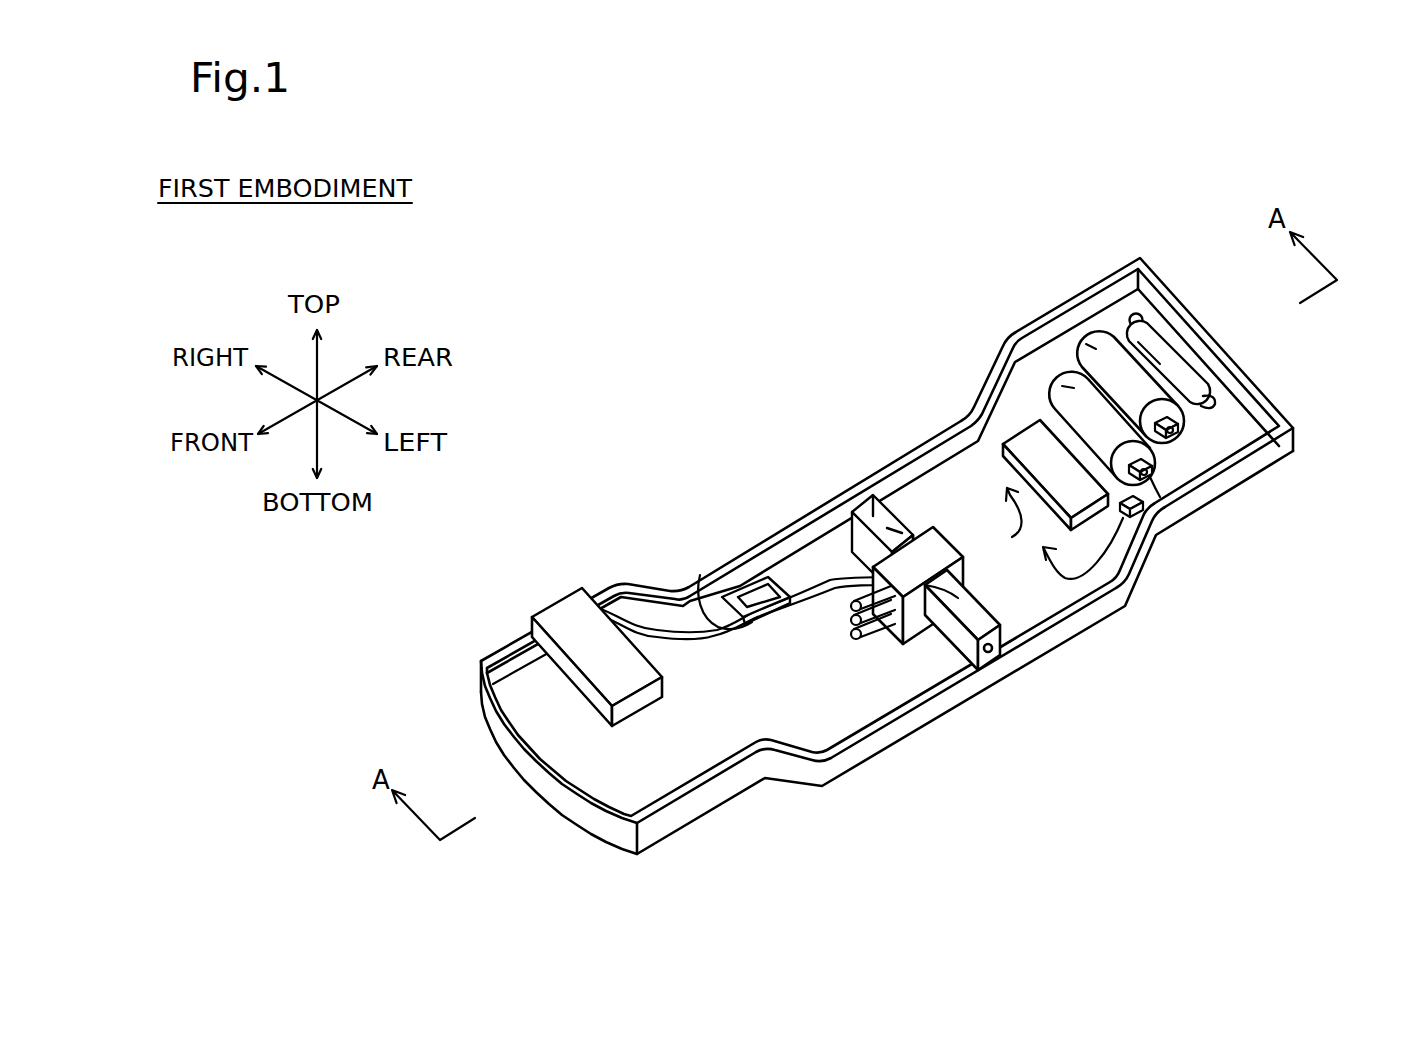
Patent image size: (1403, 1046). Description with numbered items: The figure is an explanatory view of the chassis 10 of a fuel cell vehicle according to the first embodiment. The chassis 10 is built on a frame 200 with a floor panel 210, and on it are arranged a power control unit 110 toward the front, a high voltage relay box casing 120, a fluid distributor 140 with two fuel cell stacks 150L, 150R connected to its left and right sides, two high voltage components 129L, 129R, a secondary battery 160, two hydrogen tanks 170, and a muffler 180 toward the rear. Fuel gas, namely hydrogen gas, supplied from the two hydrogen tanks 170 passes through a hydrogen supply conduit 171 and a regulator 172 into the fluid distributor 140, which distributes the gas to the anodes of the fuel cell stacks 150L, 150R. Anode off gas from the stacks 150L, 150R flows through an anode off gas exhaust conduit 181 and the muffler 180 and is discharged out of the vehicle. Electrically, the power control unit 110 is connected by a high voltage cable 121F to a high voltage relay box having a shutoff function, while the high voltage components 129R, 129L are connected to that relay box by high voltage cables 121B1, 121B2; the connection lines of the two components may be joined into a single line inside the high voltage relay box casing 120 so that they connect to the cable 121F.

The chassis 10 is at (907, 542).
The power control unit 110 is at (563, 617).
The high voltage relay box casing 120 is at (760, 615).
The high voltage cable 121F is at (700, 575).
The high voltage cable 121B1 is at (823, 580).
The high voltage cable 121B2 is at (846, 580).
The high voltage component 129R is at (873, 513).
The high voltage component 129L is at (983, 593).
The fluid distributor 140 is at (897, 644).
The fuel cell stack 150R is at (905, 513).
The fuel cell stack 150L is at (942, 655).
The secondary battery 160 is at (1040, 456).
The hydrogen tanks 170 is at (1066, 386).
The hydrogen supply conduit 171 is at (1108, 553).
The regulator 172 is at (1132, 518).
The muffler 180 is at (1163, 345).
The anode off gas exhaust conduit 181 is at (1130, 318).
The frame 200 is at (733, 793).
The floor panel 210 is at (825, 689).